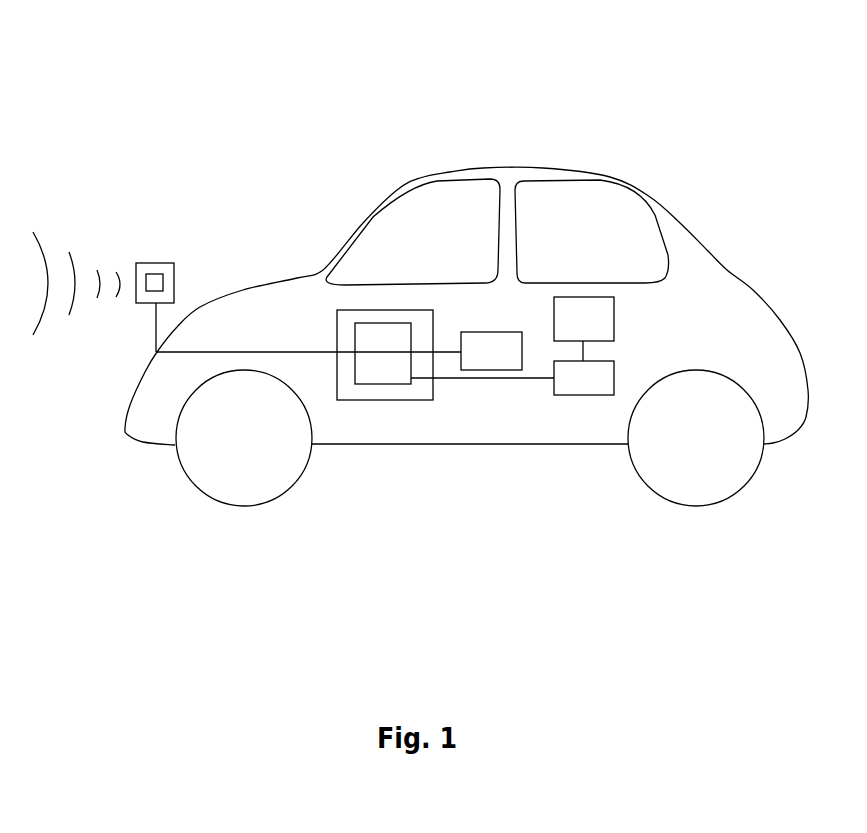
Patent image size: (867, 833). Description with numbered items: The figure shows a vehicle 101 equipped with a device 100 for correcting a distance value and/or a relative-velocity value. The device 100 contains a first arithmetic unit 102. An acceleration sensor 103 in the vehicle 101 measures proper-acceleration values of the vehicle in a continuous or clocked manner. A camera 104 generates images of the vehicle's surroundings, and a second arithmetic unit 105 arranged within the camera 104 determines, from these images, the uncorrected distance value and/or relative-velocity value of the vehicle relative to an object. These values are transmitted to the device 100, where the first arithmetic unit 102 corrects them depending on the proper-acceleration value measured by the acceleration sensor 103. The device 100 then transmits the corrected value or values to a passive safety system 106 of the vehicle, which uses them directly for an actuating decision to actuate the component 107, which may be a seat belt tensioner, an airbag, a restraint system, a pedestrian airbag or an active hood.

The device 100 is at (293, 520).
The vehicle 101 is at (685, 165).
The first arithmetic unit 102 is at (370, 384).
The acceleration sensor 103 is at (523, 350).
The camera 104 is at (160, 263).
The second arithmetic unit 105 is at (163, 283).
The passive safety system 106 is at (587, 395).
The component 107 is at (614, 315).